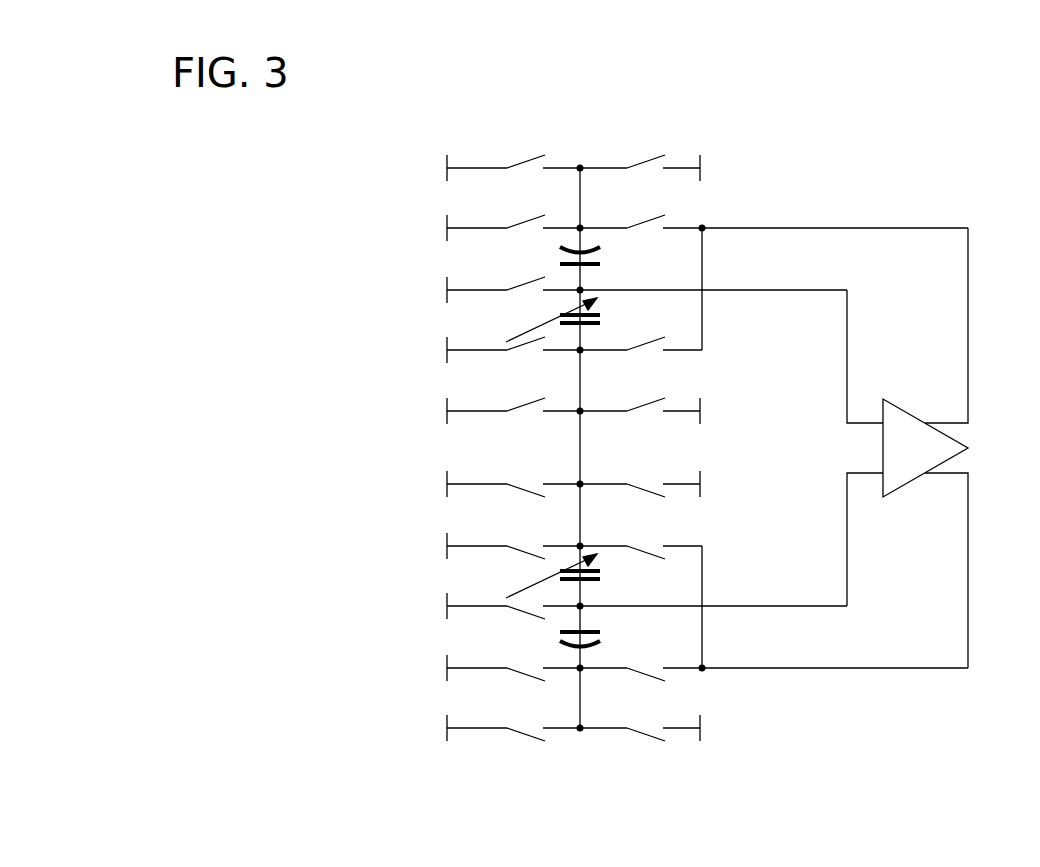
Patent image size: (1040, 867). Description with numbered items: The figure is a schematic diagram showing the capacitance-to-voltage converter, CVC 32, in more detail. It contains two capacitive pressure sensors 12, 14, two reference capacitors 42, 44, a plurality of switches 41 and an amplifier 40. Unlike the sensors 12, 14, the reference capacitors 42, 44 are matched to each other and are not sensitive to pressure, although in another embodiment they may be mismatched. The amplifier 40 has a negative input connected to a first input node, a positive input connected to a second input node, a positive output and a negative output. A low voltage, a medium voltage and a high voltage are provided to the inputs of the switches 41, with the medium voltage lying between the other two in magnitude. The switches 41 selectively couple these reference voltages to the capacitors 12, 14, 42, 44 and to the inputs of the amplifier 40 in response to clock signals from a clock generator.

The CVC 32 is at (929, 88).
The plurality of switches 41 is at (711, 123).
The reference capacitor 42 is at (600, 264).
The capacitive pressure sensor 12 is at (600, 323).
The capacitive pressure sensor 14 is at (600, 579).
The reference capacitor 44 is at (600, 632).
The amplifier 40 is at (894, 399).